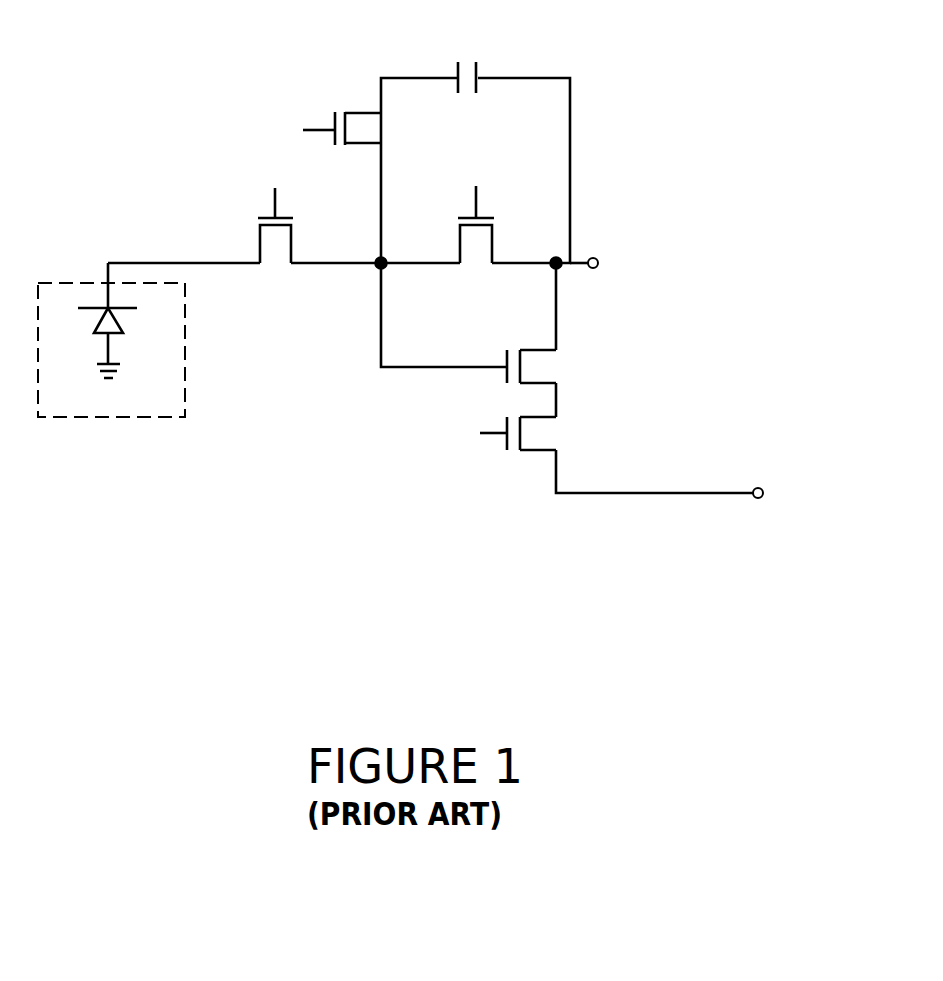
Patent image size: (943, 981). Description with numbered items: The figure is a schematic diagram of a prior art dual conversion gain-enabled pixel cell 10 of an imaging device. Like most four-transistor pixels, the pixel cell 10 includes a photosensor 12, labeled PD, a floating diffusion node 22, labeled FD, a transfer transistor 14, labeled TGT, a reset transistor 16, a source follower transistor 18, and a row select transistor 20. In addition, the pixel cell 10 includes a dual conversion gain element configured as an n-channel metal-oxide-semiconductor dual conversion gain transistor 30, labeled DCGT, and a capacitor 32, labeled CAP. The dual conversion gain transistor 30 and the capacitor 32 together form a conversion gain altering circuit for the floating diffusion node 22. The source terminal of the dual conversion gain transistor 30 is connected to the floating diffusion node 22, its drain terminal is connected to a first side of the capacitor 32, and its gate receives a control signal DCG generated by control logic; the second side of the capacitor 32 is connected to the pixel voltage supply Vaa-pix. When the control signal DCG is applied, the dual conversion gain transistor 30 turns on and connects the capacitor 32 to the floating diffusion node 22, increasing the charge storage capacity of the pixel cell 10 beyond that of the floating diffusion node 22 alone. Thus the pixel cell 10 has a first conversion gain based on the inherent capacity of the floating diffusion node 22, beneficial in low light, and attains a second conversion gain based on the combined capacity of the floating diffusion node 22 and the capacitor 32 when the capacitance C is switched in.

The pixel cell 10 is at (607, 43).
The photosensor 12 is at (124, 327).
The transfer transistor 14 is at (259, 228).
The reset transistor 16 is at (494, 222).
The source follower transistor 18 is at (505, 364).
The row select transistor 20 is at (528, 452).
The floating diffusion node 22 is at (385, 268).
The dual conversion gain transistor 30 is at (343, 146).
The capacitor 32 is at (478, 82).